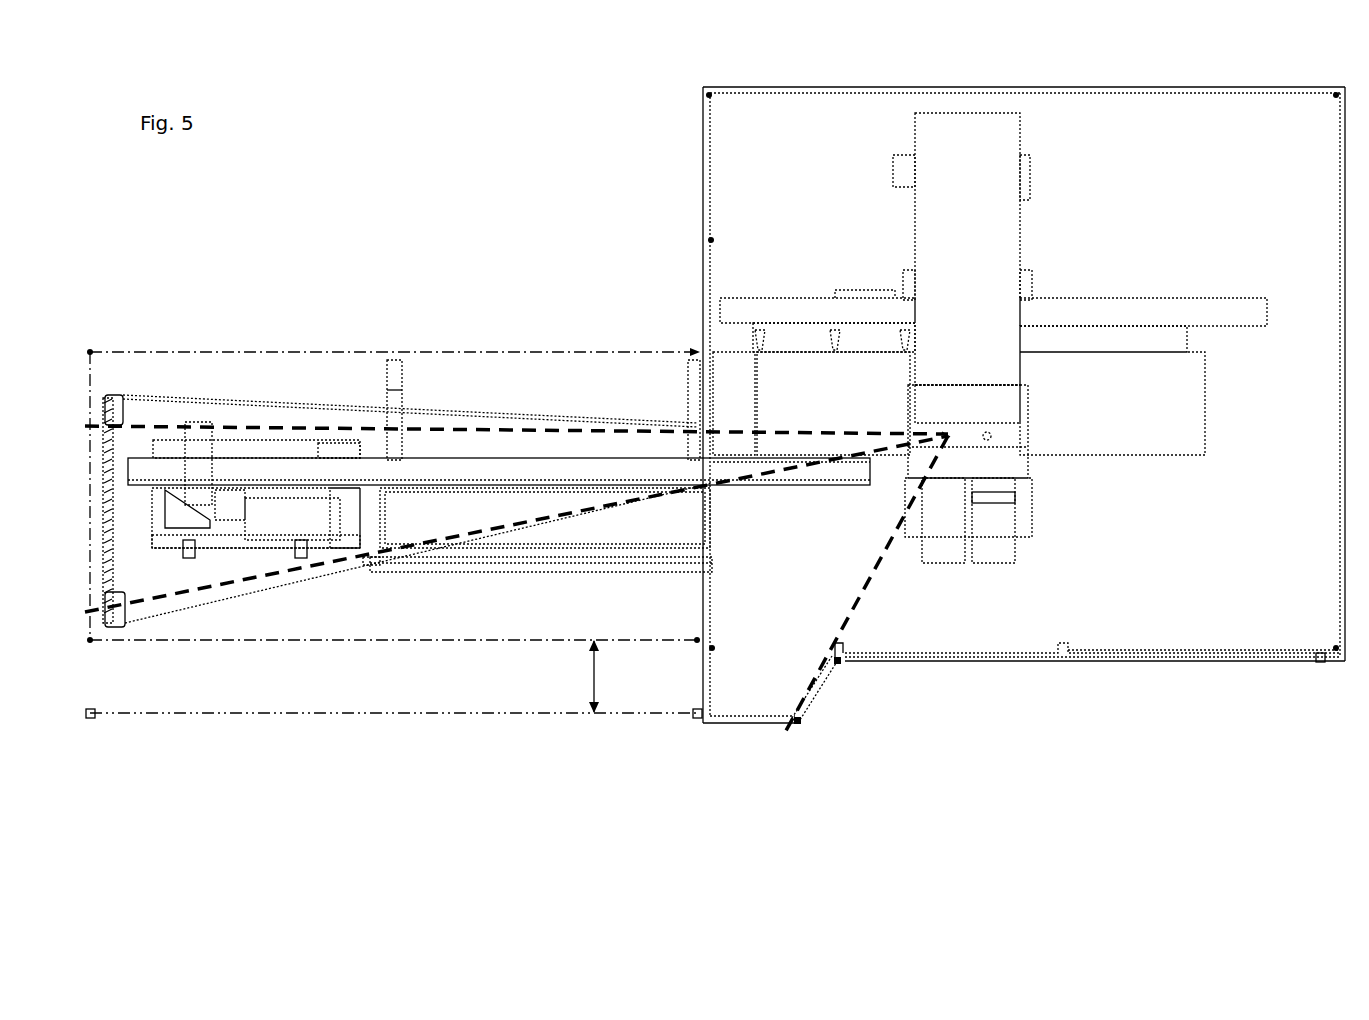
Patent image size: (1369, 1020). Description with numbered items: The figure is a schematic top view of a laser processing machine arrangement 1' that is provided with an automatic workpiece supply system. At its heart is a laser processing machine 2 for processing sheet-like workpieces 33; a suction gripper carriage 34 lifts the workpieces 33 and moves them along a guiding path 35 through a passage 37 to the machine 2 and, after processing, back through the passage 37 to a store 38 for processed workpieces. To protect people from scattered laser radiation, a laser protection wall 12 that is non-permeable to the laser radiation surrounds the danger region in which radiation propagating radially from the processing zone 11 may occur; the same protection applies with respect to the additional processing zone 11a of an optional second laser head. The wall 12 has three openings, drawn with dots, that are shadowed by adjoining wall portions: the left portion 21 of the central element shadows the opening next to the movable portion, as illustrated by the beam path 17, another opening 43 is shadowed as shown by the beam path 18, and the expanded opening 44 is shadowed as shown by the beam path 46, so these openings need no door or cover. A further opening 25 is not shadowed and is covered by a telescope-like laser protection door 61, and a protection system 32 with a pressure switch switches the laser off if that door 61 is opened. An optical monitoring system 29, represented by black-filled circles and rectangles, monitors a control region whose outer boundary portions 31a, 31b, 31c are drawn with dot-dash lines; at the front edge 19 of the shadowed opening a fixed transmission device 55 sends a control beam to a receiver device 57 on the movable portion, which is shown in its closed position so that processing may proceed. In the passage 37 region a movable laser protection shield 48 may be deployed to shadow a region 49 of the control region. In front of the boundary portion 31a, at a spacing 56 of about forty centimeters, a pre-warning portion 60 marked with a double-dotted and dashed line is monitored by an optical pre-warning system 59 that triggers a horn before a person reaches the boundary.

The laser processing machine arrangement 1' is at (600, 135).
The laser processing machine 2 is at (1050, 236).
The processing zone 11 is at (945, 432).
The additional processing zone 11a is at (988, 431).
The laser protection wall 12 is at (1345, 478).
The beam path 17 is at (870, 568).
The beam path 18 is at (793, 478).
The front edge 19 is at (832, 631).
The left portion 21 is at (853, 657).
The additional opening 25 is at (1185, 668).
The optical monitoring system 29 is at (92, 338).
The outer boundary portion 31a is at (378, 641).
The outer boundary portion 31b is at (75, 634).
The outer boundary portion 31c is at (292, 352).
The protection system 32 is at (1318, 654).
The workpieces 33 is at (808, 375).
The suction gripper carriage 34 is at (204, 530).
The guiding path 35 is at (450, 470).
The passage 37 is at (714, 505).
The store for processed workpieces 38 is at (605, 527).
The opening 43 is at (287, 592).
The expanded opening 44 is at (230, 400).
The beam path 46 is at (346, 420).
The movable laser protection shield 48 is at (707, 530).
The shadowed region 49 is at (523, 398).
The transmission device 55 is at (841, 661).
The spacing 56 is at (608, 676).
The receiver device 57 is at (801, 722).
The optical pre-warning system 59 is at (98, 726).
The pre-warning portion 60 is at (346, 715).
The laser protection door 61 is at (1270, 665).